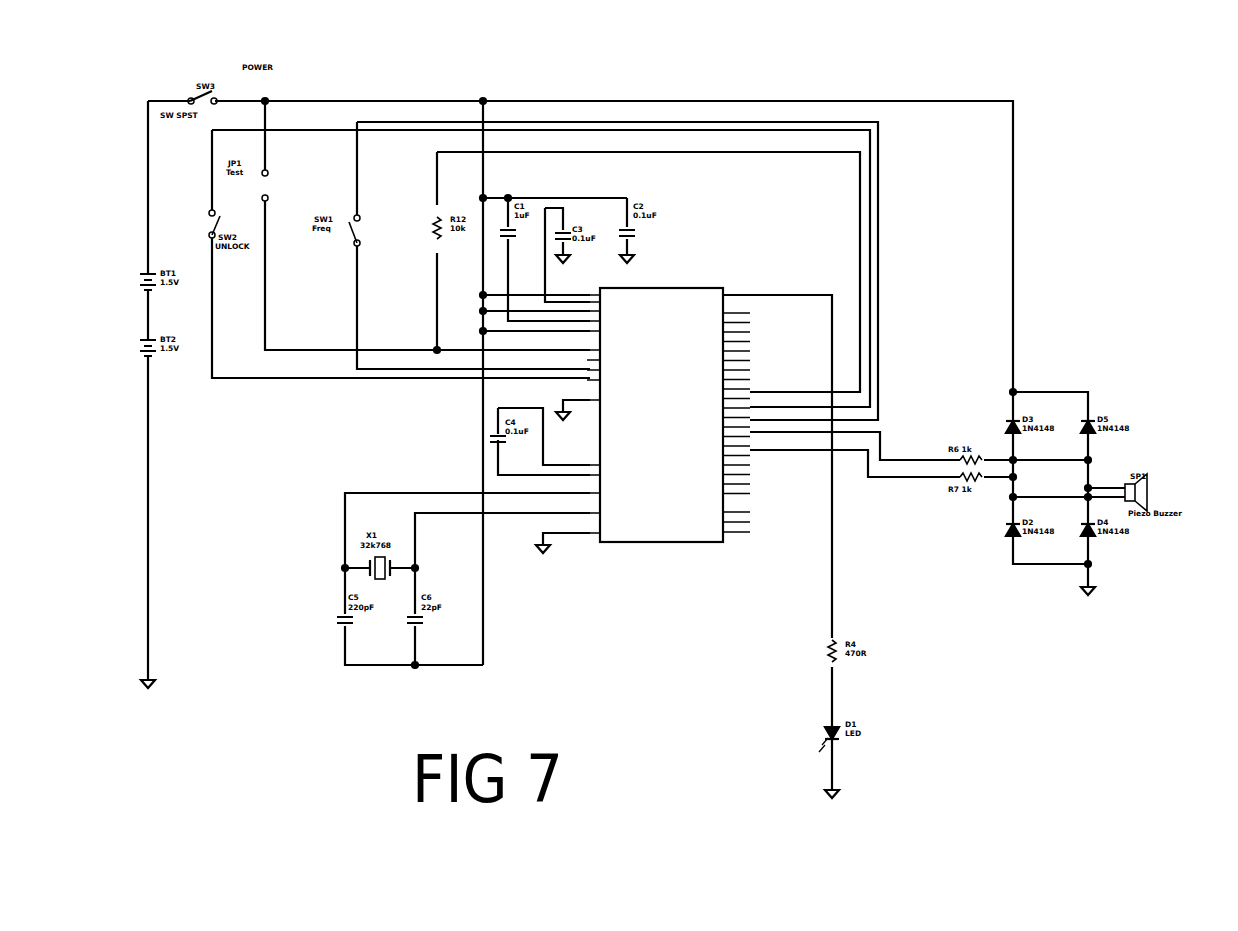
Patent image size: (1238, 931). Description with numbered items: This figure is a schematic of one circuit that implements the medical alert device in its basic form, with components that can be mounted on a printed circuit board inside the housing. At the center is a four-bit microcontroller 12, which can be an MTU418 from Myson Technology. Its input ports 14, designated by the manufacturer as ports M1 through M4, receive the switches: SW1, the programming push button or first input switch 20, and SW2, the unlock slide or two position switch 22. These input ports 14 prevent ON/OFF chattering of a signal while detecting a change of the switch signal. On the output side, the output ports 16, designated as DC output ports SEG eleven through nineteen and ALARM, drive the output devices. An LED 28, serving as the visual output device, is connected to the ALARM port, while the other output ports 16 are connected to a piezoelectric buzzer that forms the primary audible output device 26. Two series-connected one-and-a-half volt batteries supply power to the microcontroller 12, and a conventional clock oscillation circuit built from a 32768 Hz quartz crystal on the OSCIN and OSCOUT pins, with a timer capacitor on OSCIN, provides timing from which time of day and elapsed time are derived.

The microcontroller 12 is at (703, 310).
The input ports 14 is at (643, 310).
The output ports 16 is at (772, 310).
The first input switch 20 is at (356, 216).
The two position switch 22 is at (208, 215).
The audible output device 26 is at (1163, 468).
The LED 28 is at (822, 732).